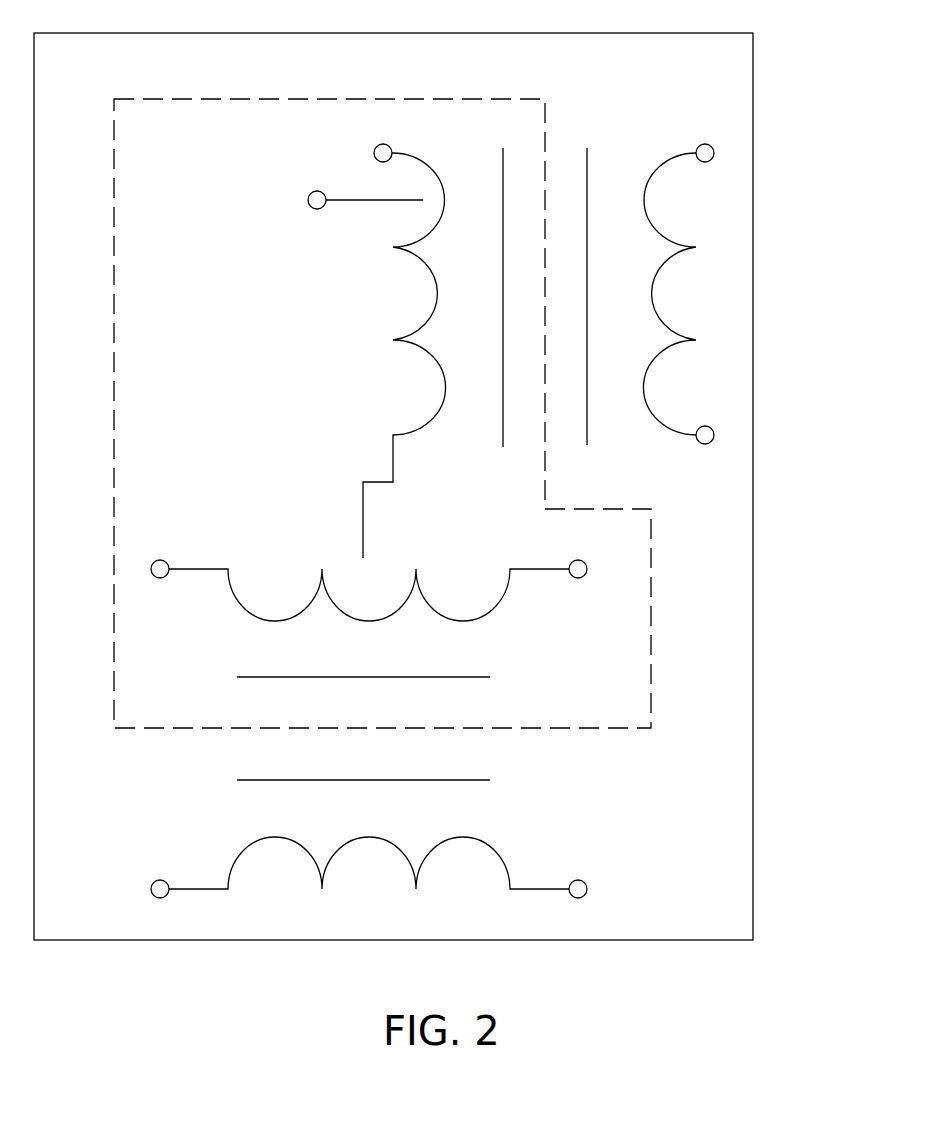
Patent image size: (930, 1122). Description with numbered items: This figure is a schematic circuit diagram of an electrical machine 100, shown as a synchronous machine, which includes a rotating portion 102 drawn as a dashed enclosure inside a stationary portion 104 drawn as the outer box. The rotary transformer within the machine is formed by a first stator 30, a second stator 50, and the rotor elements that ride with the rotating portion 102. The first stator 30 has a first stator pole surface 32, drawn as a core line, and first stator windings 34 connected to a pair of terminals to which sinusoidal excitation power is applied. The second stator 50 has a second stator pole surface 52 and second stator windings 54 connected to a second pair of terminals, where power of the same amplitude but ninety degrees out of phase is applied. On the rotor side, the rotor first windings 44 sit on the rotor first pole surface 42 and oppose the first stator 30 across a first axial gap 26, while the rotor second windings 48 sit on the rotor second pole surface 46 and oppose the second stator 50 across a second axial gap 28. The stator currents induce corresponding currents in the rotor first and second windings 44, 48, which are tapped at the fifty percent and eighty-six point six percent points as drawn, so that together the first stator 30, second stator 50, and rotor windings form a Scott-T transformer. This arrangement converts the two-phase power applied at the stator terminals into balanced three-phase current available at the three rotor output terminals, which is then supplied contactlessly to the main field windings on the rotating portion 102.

The electrical machine 100 is at (170, 980).
The rotating portion 102 is at (134, 148).
The stationary portion 104 is at (56, 78).
The first axial gap 26 is at (351, 715).
The second axial gap 28 is at (553, 311).
The first stator 30 is at (311, 952).
The first stator pole surface 32 is at (380, 780).
The first stator windings 34 is at (252, 840).
The rotor first pole surface 42 is at (378, 677).
The rotor first windings 44 is at (250, 613).
The rotor second pole surface 46 is at (503, 388).
The rotor second windings 48 is at (430, 163).
The second stator 50 is at (765, 248).
The second stator pole surface 52 is at (588, 387).
The second stator windings 54 is at (668, 157).